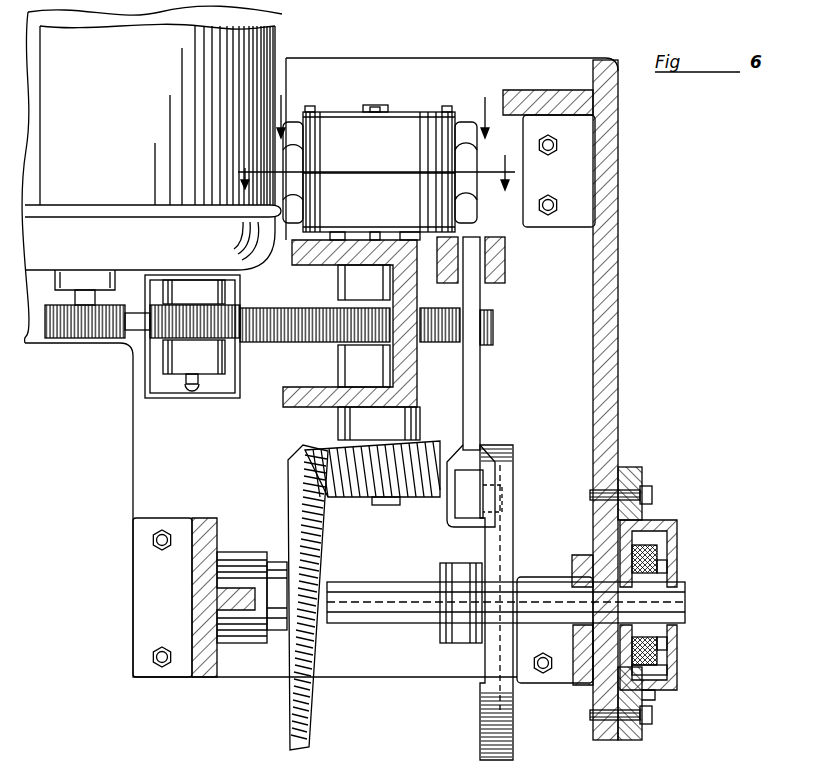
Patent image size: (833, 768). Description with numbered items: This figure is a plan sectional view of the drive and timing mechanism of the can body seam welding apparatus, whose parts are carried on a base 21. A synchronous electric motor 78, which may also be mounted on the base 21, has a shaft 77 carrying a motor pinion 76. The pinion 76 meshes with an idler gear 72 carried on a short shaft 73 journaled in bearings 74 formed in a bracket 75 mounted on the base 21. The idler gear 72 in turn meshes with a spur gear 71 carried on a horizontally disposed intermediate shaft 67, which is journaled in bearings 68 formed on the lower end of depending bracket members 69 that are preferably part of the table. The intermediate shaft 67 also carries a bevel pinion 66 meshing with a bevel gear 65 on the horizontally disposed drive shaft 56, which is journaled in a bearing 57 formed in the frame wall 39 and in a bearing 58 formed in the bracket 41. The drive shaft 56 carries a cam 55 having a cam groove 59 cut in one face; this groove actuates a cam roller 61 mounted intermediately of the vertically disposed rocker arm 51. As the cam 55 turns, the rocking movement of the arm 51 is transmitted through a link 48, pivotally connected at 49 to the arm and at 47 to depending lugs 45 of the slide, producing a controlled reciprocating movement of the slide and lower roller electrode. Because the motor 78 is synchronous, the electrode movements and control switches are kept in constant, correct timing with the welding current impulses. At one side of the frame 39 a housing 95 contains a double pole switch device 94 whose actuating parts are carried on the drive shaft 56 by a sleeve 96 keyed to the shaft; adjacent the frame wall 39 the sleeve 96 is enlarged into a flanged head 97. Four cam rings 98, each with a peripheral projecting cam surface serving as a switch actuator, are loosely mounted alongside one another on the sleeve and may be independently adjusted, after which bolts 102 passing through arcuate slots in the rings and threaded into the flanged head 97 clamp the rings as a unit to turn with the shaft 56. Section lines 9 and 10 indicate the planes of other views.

The section line 9- 9 is at (384, 106).
The section line 10- 10 is at (360, 188).
The base 21 is at (147, 486).
The frame wall 39 is at (619, 335).
The bracket 41 is at (208, 679).
The depending lugs 45 is at (505, 283).
The pivotal connection 47 is at (507, 270).
The link 48 is at (482, 388).
The pivotal connection 49 is at (448, 505).
The rocker arm 51 is at (466, 520).
The cam 55 is at (480, 740).
The drive shaft 56 is at (358, 613).
The bearing 57 is at (574, 648).
The bearing 58 is at (243, 643).
The cam groove 59 is at (482, 648).
The cam roller 61 is at (503, 515).
The bevel gear 65 is at (318, 735).
The bevel pinion 66 is at (352, 498).
The intermediate shaft 67 is at (385, 505).
The bearings 68 is at (352, 367).
The depending bracket members 69 is at (298, 404).
The spur gear 71 is at (295, 341).
The idler gear 72 is at (248, 341).
The short shaft 73 is at (195, 392).
The bearings 74 is at (194, 327).
The bracket 75 is at (168, 394).
The motor pinion 76 is at (64, 340).
The motor shaft 77 is at (73, 300).
The synchronous electric motor 78 is at (152, 174).
The switch device 94 is at (660, 556).
The housing 95 is at (672, 520).
The sleeve 96 is at (662, 640).
The flanged head 97 is at (650, 692).
The cam rings 98 is at (656, 668).
The bolts 102 is at (668, 652).